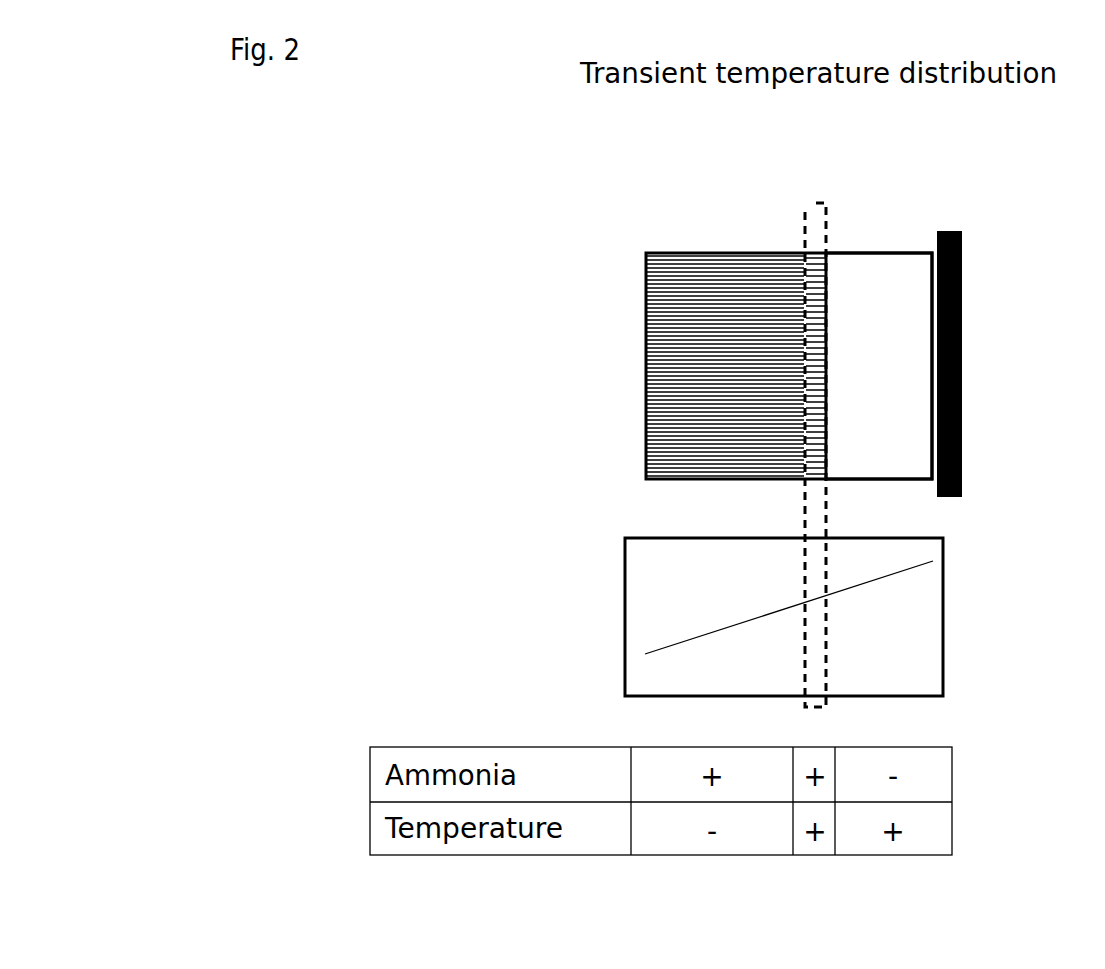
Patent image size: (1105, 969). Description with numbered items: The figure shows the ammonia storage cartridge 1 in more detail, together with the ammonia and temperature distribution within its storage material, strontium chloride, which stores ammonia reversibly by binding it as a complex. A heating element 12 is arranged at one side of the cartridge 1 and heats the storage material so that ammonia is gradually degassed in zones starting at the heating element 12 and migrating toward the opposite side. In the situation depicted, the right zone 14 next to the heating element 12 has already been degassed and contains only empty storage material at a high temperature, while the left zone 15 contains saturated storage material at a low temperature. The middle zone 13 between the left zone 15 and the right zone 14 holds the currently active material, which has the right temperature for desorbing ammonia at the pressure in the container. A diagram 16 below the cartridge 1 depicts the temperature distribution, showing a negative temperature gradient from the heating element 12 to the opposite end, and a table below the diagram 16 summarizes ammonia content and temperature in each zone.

The ammonia storage cartridge 1 is at (612, 291).
The heating element 12 is at (962, 282).
The middle zone 13 is at (817, 250).
The right zone 14 is at (888, 405).
The left zone 15 is at (722, 362).
The diagram 16 is at (972, 662).